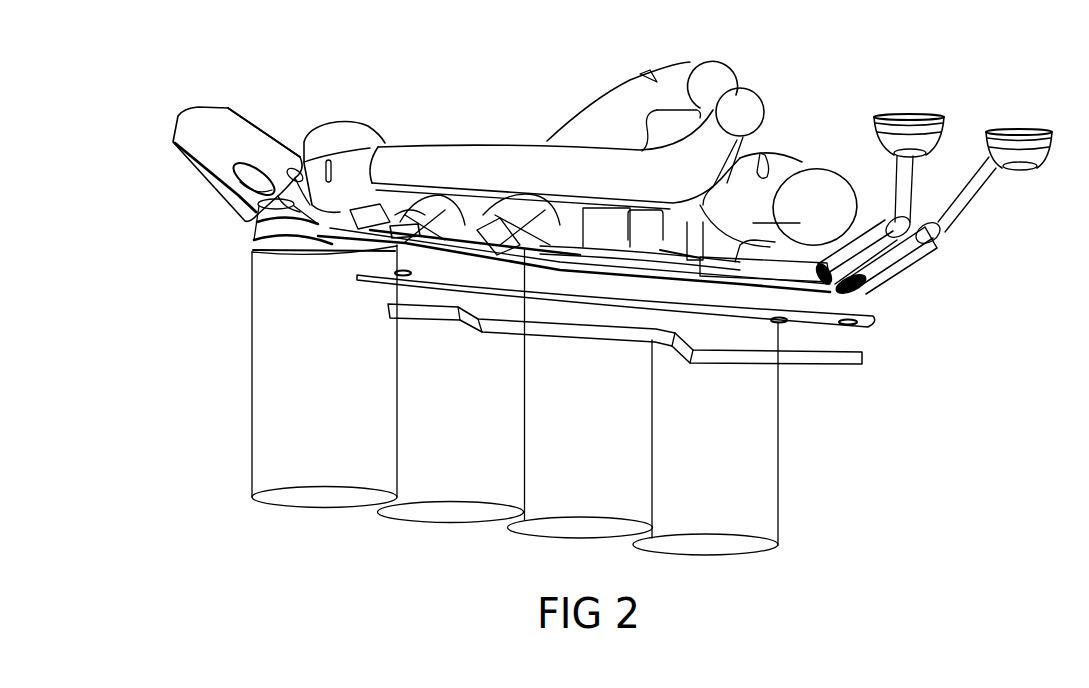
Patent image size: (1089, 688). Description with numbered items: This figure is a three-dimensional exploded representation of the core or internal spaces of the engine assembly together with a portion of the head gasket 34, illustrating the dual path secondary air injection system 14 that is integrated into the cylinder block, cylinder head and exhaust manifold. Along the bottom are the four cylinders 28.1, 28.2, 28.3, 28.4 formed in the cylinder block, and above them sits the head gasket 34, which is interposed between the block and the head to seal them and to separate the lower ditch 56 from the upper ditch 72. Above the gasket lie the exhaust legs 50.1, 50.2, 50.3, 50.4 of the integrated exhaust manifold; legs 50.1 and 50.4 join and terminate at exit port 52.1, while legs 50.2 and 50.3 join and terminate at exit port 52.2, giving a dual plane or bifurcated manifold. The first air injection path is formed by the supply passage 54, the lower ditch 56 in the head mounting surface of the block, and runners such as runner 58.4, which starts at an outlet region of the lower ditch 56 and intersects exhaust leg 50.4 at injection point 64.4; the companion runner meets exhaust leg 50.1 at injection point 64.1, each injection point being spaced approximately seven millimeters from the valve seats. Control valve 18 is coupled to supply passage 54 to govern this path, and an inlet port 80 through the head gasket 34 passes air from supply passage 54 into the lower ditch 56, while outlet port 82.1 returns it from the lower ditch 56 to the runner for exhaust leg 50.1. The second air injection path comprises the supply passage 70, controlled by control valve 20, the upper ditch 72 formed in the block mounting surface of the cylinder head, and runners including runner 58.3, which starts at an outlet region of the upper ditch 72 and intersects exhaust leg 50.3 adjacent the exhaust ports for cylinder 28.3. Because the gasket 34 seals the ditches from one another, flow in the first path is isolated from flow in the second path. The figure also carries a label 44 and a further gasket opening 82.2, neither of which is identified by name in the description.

The secondary air injection system 14 is at (1005, 323).
The control valve 18 is at (1022, 130).
The control valve 20 is at (909, 116).
The cylinder 28.1 is at (706, 545).
The cylinder 28.2 is at (578, 528).
The cylinder 28.3 is at (452, 513).
The cylinder 28.4 is at (326, 497).
The head gasket 34 is at (832, 328).
The manifold module 44 is at (148, 171).
The exhaust leg 50.1 is at (783, 167).
The exhaust leg 50.2 is at (722, 108).
The exhaust leg 50.3 is at (633, 90).
The exhaust leg 50.4 is at (408, 156).
The exit port 52.1 is at (748, 108).
The exit port 52.2 is at (713, 75).
The supply passage 54 is at (898, 250).
The lower ditch 56 is at (843, 366).
The runner 58.3 is at (505, 237).
The runner 58.4 is at (258, 256).
The injection point 64.1 is at (790, 175).
The injection point 64.4 is at (298, 158).
The supply passage 70 is at (857, 250).
The upper ditch 72 is at (687, 258).
The inlet port 80 is at (848, 323).
The outlet port 82.1 is at (781, 335).
The hole 82.2 is at (405, 278).